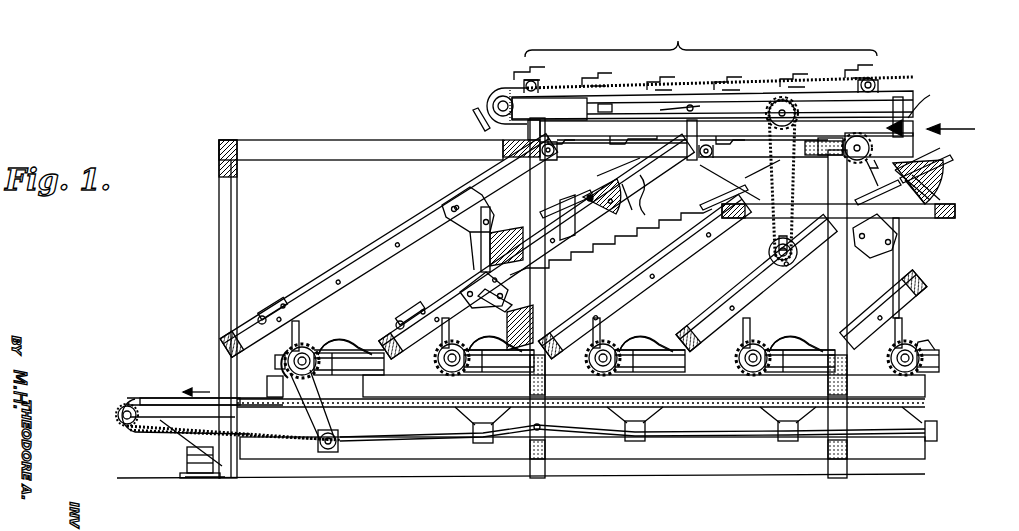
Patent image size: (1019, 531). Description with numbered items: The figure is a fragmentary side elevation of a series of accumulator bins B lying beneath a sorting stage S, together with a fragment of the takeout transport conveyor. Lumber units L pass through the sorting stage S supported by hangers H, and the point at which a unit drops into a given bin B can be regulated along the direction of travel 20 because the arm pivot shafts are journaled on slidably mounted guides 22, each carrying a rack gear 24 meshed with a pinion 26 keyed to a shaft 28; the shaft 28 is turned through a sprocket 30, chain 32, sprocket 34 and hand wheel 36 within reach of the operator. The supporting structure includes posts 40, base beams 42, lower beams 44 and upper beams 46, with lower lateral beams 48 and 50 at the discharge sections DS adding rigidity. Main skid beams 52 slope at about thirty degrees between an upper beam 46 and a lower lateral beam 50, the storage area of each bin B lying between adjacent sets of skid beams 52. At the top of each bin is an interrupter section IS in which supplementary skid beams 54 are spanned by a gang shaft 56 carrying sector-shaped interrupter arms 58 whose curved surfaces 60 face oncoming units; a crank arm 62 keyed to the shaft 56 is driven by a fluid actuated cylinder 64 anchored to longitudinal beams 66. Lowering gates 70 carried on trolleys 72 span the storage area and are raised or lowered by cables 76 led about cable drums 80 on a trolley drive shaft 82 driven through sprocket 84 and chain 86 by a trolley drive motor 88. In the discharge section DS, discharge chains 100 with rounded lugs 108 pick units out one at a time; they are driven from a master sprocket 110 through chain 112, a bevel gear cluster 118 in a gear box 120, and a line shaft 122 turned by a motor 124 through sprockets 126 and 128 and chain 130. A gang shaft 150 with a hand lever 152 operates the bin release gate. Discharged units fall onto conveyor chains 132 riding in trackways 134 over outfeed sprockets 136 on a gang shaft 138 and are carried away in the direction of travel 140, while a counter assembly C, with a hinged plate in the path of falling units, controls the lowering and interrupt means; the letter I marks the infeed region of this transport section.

The direction of travel 20 is at (950, 128).
The slidably mounted guides 22 is at (590, 120).
The rack gear 24 is at (650, 126).
The pinion 26 is at (627, 108).
The shaft 28 is at (798, 112).
The sprocket 30 is at (778, 84).
The chain 32 is at (774, 227).
The sprocket 34 is at (770, 251).
The hand wheel 36 is at (771, 259).
The posts 40 is at (237, 260).
The base beams 42 is at (366, 460).
The lower beams 44 is at (400, 397).
The upper beams 46 is at (325, 140).
The lower lateral beam 48 is at (312, 348).
The lower lateral beam 50 is at (384, 358).
The main skid beams 52 is at (325, 262).
The supplementary skid beams 54 is at (630, 172).
The gang shaft 56 is at (896, 190).
The interrupter arms 58 is at (612, 190).
The curved surfaces 60 is at (628, 204).
The crank arm 62 is at (815, 182).
The fluid actuated cylinder 64 is at (782, 226).
The beams 66 is at (905, 234).
The lowering gates 70 is at (481, 242).
The trolleys 72 is at (460, 196).
The cables 76 is at (505, 190).
The cable drums 80 is at (555, 150).
The trolley drive shaft 82 is at (556, 158).
The sprocket 84 is at (874, 168).
The chain 86 is at (872, 178).
The trolley drive motor 88 is at (496, 310).
The discharge chains 100 is at (335, 378).
The lugs 108 is at (342, 334).
The master sprocket 110 is at (288, 360).
The chain 112 is at (910, 412).
The bevel gear cluster 118 is at (329, 452).
The gear box 120 is at (490, 426).
The line shaft 122 is at (285, 438).
The motor 124 is at (187, 462).
The sprocket 126 is at (218, 478).
The sprocket 128 is at (160, 437).
The chain 130 is at (175, 447).
The conveyor chains 132 is at (136, 397).
The trackways 134 is at (168, 398).
The outfeed sprockets 136 is at (115, 400).
The gang shaft 138 is at (116, 413).
The direction of travel 140 is at (205, 391).
The gang shaft 150 is at (262, 318).
The hand lever 152 is at (282, 304).
The sorting stage S is at (701, 35).
The counter assembly C is at (919, 106).
The accumulator bin B is at (647, 242).
The discharge section DS is at (546, 320).
The hangers H is at (693, 97).
The lumber units L is at (814, 177).
The infeed I is at (160, 415).
The interrupter section IS is at (732, 163).